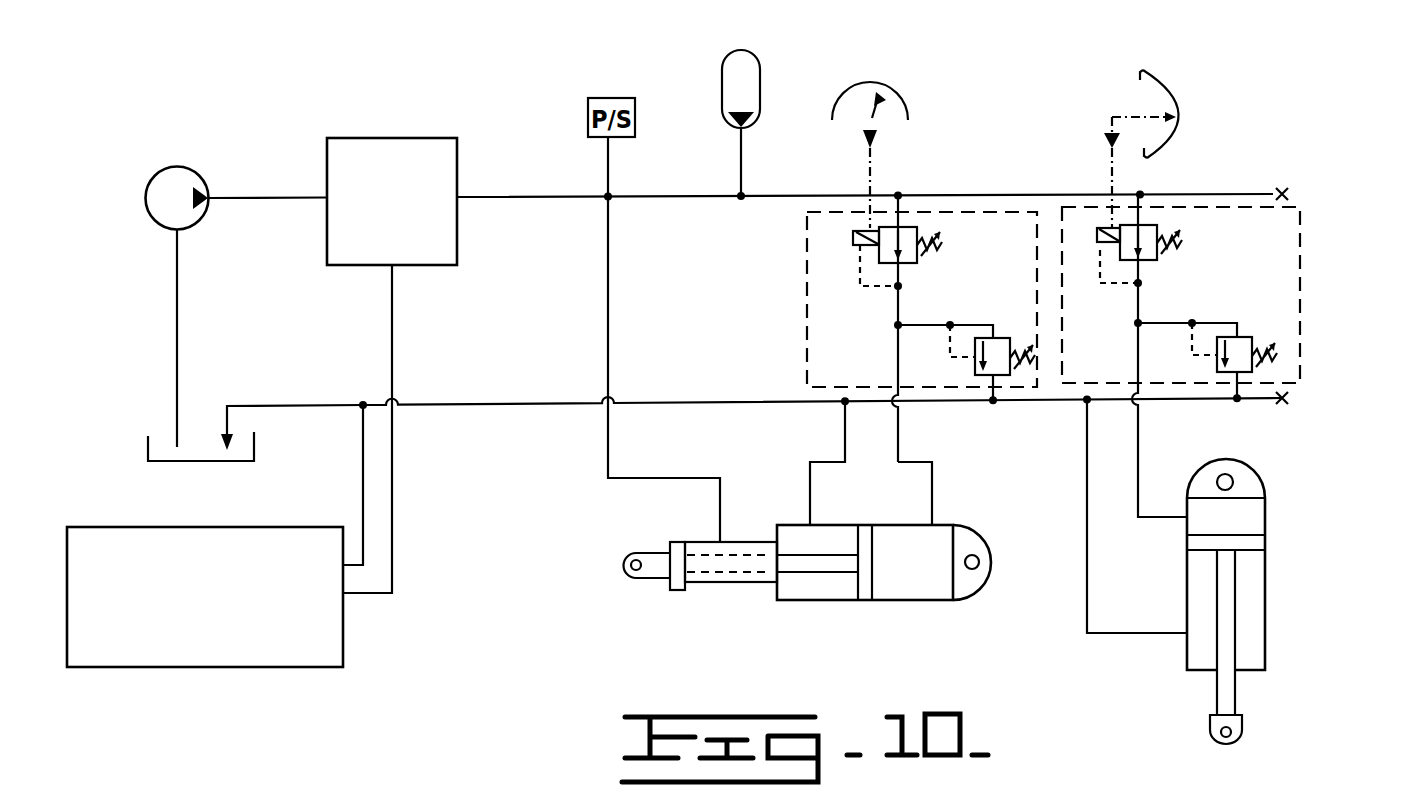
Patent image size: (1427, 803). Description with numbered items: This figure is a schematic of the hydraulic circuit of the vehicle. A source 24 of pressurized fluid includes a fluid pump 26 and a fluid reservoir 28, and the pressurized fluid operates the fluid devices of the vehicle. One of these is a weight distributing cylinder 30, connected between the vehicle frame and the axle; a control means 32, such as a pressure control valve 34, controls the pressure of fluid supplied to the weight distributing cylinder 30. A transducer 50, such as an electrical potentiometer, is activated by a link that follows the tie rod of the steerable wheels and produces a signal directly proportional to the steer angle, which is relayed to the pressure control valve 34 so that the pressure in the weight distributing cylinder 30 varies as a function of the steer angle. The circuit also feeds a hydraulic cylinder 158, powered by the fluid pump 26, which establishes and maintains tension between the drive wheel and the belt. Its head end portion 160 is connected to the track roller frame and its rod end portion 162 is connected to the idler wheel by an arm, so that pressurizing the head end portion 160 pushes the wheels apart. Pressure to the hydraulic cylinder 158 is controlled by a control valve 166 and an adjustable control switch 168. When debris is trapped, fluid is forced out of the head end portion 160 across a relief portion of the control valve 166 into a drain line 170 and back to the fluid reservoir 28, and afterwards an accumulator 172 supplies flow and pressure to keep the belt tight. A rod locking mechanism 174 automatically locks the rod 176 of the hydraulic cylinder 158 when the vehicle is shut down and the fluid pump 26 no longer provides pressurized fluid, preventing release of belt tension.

The source of pressurized fluid 24 is at (187, 279).
The fluid pump 26 is at (162, 180).
The fluid reservoir 28 is at (167, 462).
The weight distributing cylinder 30 is at (1257, 515).
The control means 32 is at (1214, 333).
The pressure control valve 34 is at (1102, 210).
The transducer 50 is at (1178, 92).
The hydraulic cylinder 158 is at (913, 598).
The head end portion 160 is at (973, 540).
The rod end portion 162 is at (650, 573).
The control valve 166 is at (807, 285).
The adjustable control switch 168 is at (905, 108).
The drain line 170 is at (758, 403).
The accumulator 172 is at (728, 64).
The rod locking mechanism 174 is at (731, 558).
The rod 176 is at (740, 555).